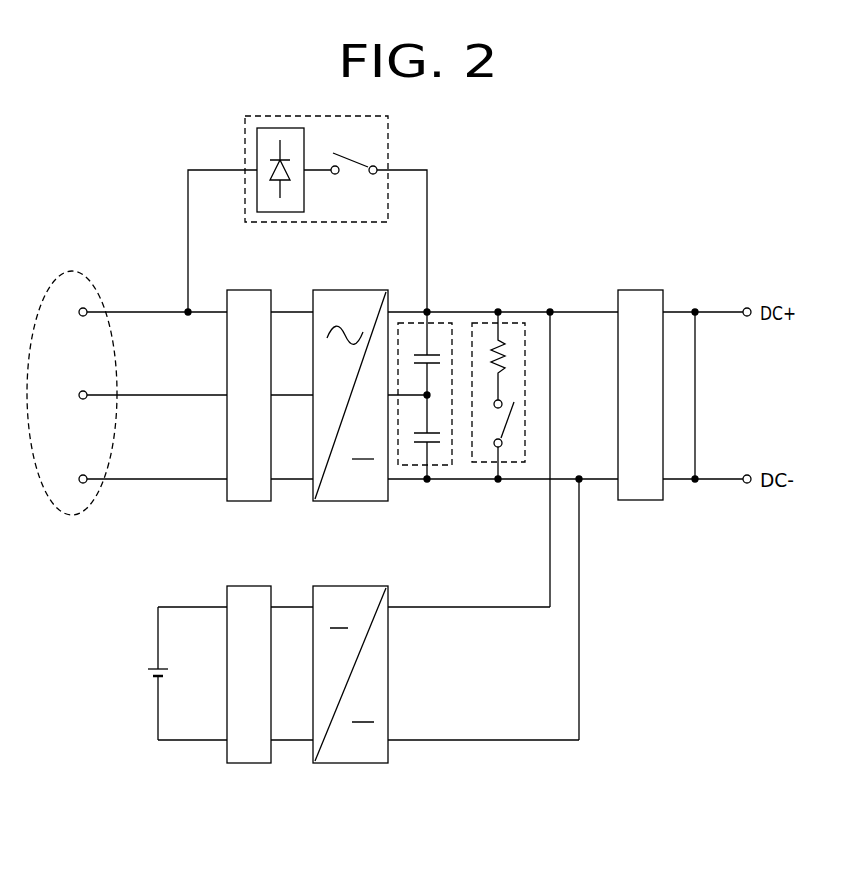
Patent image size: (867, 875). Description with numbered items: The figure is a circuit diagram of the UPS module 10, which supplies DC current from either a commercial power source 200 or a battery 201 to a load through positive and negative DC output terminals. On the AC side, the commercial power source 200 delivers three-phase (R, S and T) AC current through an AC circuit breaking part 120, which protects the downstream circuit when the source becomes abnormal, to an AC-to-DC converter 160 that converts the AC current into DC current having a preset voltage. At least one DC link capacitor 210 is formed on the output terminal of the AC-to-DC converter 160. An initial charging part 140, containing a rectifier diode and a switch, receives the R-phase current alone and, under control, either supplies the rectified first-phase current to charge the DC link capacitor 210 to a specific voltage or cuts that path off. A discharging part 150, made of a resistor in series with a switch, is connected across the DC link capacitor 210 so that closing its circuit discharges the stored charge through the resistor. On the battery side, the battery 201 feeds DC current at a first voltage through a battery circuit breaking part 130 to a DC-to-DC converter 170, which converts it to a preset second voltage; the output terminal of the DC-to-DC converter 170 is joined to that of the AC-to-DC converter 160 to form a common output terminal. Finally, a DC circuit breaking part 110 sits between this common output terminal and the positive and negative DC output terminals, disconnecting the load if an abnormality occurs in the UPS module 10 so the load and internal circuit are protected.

The UPS module 10 is at (538, 155).
The commercial power source 200 is at (72, 272).
The battery 201 is at (148, 672).
The DC circuit breaking part 110 is at (641, 290).
The AC circuit breaking part 120 is at (249, 290).
The battery circuit breaking part 130 is at (249, 586).
The initial charging part 140 is at (388, 138).
The discharging part 150 is at (514, 323).
The AC-to-DC converter 160 is at (351, 290).
The DC-to-DC converter 170 is at (351, 586).
The DC link capacitor 210 is at (449, 323).